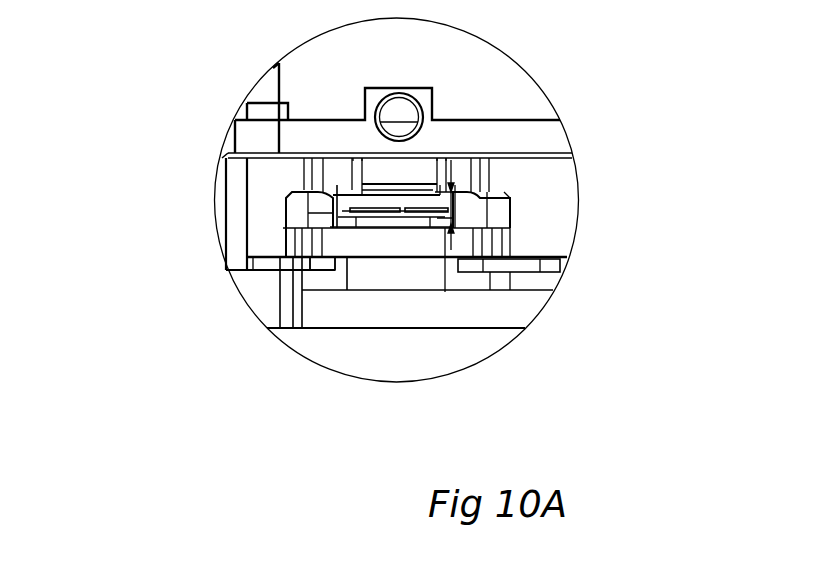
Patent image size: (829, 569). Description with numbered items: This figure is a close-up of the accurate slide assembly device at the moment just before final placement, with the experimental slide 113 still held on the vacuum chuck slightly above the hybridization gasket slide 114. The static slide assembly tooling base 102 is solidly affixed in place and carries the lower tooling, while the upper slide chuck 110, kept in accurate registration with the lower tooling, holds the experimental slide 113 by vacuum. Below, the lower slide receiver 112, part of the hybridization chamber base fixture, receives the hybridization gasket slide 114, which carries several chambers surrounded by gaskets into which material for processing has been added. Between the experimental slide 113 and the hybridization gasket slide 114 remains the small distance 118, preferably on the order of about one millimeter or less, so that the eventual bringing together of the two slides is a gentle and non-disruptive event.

The upper slide chuck 110 is at (462, 173).
The small distance 118 is at (468, 212).
The lower slide receiver 112 is at (468, 243).
The static slide assembly tooling base 102 is at (473, 281).
The experimental slide 113 is at (313, 188).
The hybridization gasket slide 114 is at (312, 213).